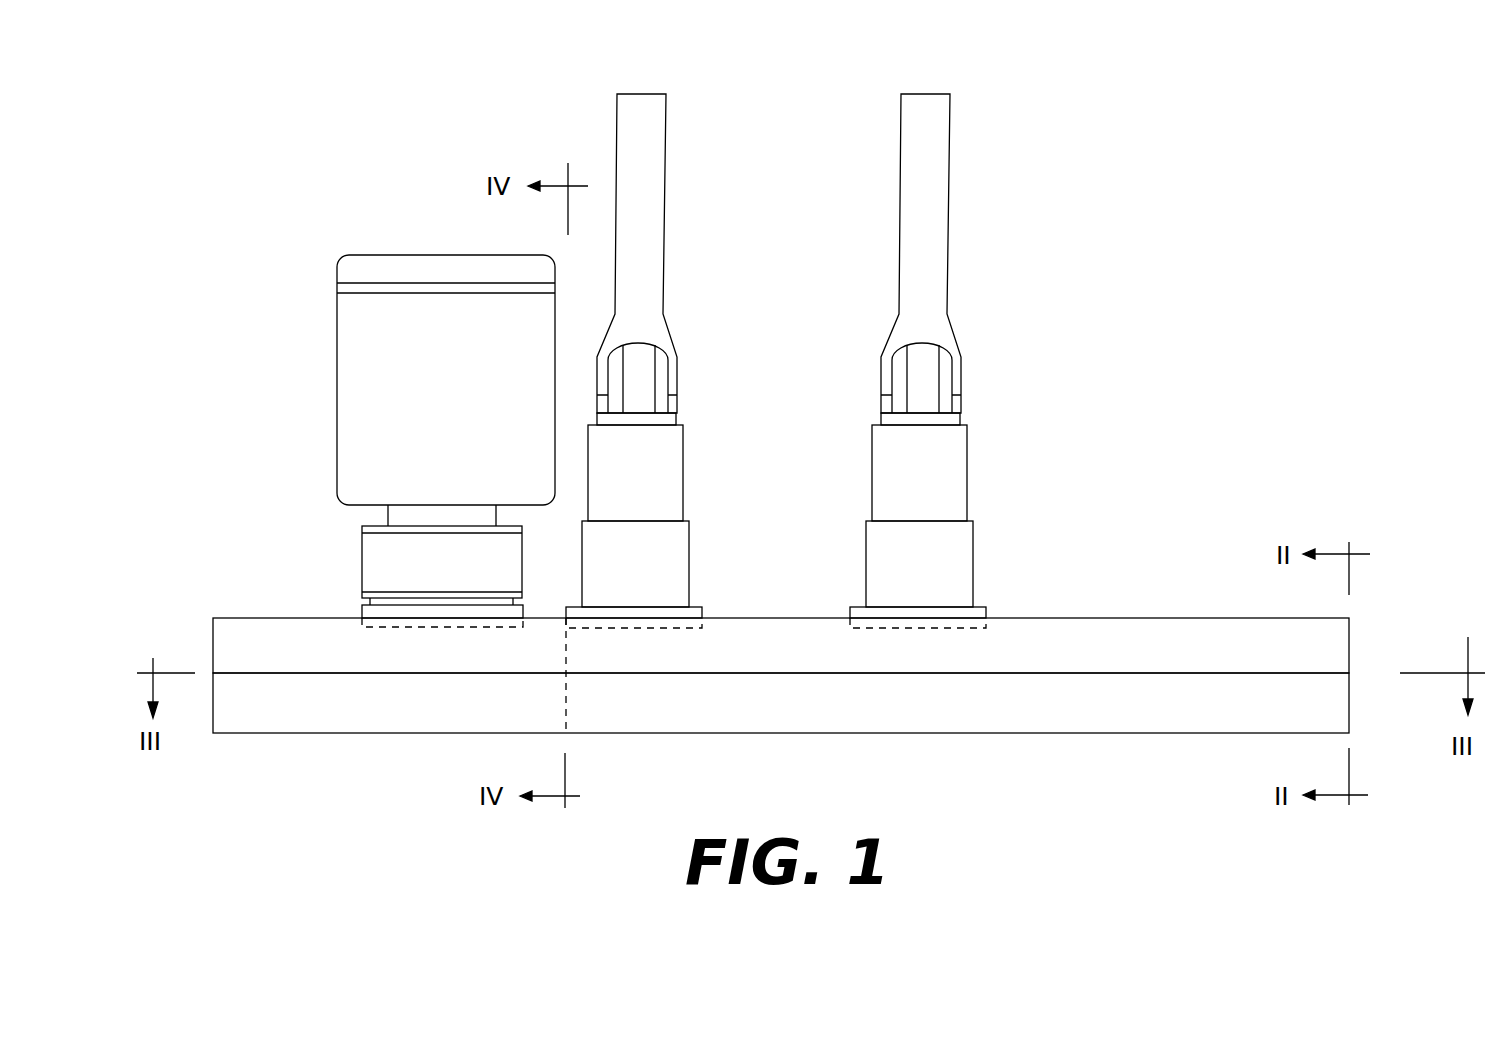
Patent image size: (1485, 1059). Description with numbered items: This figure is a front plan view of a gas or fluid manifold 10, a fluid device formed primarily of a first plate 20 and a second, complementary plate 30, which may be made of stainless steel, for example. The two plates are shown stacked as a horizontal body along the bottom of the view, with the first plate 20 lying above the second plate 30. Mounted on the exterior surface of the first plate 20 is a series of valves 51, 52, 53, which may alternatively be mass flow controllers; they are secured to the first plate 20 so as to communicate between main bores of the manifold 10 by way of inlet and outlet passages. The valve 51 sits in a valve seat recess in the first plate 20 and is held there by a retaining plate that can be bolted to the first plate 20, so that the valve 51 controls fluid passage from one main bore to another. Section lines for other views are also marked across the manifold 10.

The gas or fluid manifold 10 is at (1143, 380).
The first plate 20 is at (1349, 634).
The second plate 30 is at (1349, 713).
The valve 51 is at (377, 255).
The valve 52 is at (683, 463).
The valve 53 is at (942, 361).